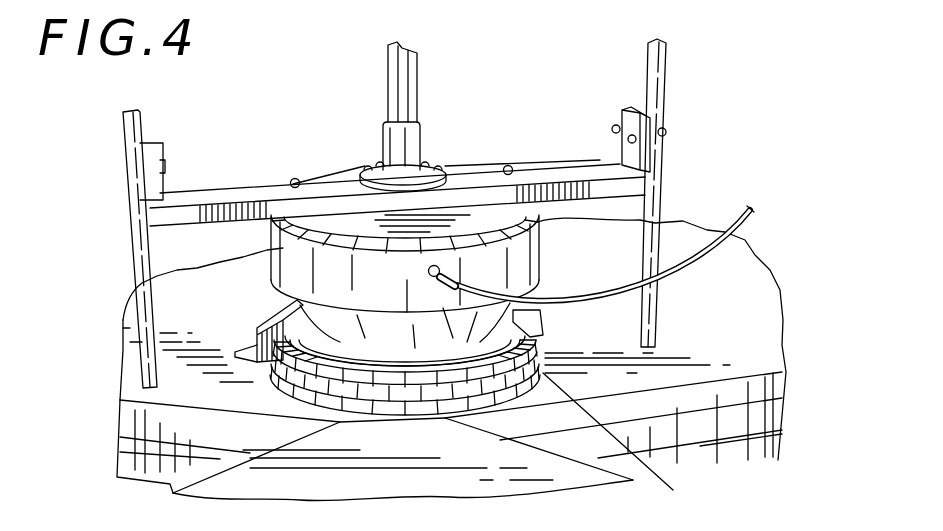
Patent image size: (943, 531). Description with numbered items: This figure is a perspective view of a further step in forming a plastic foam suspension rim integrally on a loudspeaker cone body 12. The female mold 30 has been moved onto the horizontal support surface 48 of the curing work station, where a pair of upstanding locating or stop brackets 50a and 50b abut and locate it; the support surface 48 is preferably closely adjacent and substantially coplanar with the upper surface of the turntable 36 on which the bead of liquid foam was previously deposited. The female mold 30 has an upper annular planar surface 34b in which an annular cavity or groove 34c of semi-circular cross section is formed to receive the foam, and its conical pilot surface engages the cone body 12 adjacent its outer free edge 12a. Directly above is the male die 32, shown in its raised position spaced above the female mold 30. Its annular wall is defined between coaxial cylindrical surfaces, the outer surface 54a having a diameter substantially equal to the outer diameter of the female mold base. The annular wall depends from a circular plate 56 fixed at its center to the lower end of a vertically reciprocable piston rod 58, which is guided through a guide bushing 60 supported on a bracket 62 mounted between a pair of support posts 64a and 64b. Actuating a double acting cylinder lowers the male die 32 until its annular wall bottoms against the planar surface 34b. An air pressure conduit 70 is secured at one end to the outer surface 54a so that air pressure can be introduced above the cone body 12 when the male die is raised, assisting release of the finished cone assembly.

The cone body 12 is at (330, 340).
The outer free edge 12a is at (367, 418).
The female mold 30 is at (264, 374).
The male die 32 is at (273, 240).
The upper annular planar surface 34b is at (447, 418).
The annular cavity or groove 34c is at (673, 490).
The turntable 36 is at (553, 465).
The horizontal support surface 48 is at (757, 353).
The locating or stop bracket 50a is at (543, 327).
The locating or stop bracket 50b is at (260, 318).
The outer cylindrical surface 54a is at (522, 272).
The circular plate 56 is at (457, 163).
The piston rod 58 is at (417, 72).
The guide bushing 60 is at (423, 133).
The bracket 62 is at (203, 190).
The support post 64a is at (668, 75).
The support post 64b is at (140, 110).
The air pressure conduit 70 is at (747, 207).